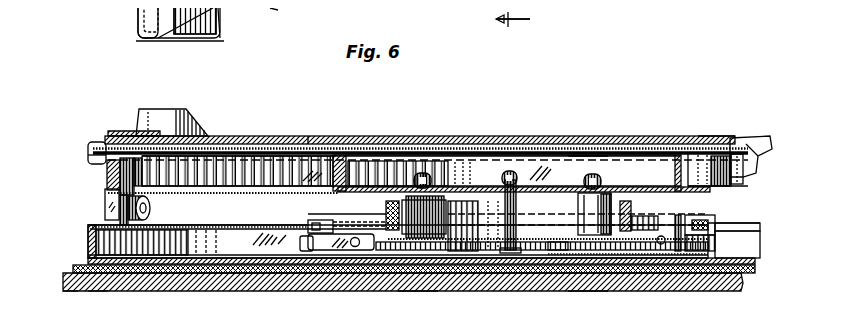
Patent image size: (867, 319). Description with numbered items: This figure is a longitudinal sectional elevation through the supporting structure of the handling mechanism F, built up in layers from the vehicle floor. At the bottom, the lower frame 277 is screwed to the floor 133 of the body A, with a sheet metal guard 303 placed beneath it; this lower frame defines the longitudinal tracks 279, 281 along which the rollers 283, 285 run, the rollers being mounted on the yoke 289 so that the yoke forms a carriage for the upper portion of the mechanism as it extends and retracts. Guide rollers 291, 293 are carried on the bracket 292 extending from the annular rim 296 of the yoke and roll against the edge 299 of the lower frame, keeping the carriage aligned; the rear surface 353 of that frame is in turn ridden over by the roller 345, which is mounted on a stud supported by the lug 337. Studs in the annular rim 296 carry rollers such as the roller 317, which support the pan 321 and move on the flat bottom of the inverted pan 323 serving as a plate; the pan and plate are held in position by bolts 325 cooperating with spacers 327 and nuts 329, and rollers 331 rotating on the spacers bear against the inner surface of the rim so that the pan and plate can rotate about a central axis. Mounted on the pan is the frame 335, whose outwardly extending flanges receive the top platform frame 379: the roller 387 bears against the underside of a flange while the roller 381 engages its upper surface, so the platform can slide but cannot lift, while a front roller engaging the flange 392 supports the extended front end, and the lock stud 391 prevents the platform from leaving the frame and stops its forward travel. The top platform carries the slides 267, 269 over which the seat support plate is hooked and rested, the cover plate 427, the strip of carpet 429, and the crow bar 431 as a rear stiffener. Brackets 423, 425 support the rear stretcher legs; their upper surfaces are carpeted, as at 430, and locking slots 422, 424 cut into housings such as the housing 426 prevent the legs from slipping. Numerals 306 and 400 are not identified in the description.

The body A is at (718, 279).
The sheet metal guard 303 is at (747, 260).
The floor 133 is at (80, 252).
The lower frame 277 is at (82, 216).
The strip of carpet 429 is at (304, 128).
The pan 321 is at (395, 150).
The rollers 331 is at (368, 170).
The annular rim 296 is at (610, 183).
The crow bar 431 is at (179, 103).
The bracket 425 is at (195, 122).
The roller 381 is at (129, 126).
The handling mechanism F is at (292, 140).
The roller 387 is at (90, 157).
The lug 337 is at (688, 172).
The rear surface 353 is at (154, 214).
The roller 345 is at (97, 187).
The bracket 292 is at (345, 213).
The guide roller 293 is at (300, 213).
The roller 285 is at (318, 243).
The slide block 306 is at (440, 258).
The nut 329 is at (420, 185).
The roller 317 is at (503, 165).
The bolt 325 is at (478, 145).
The spacer 327 is at (548, 195).
The inverted pan 323 is at (543, 233).
The yoke 289 is at (586, 148).
The roller 283 is at (668, 220).
The guide roller 291 is at (712, 222).
The edge 299 is at (750, 222).
The longitudinal track 279 is at (745, 233).
The top platform frame 379 is at (725, 160).
The frame 335 is at (722, 178).
The flange 392 is at (758, 135).
The slide 267 is at (756, 140).
The cover plate 427 is at (700, 133).
The carpet 430 is at (150, 33).
The bracket 423 is at (222, 32).
The lock stud 391 is at (236, 4).
The slide 269 is at (270, 0).
The longitudinal track 281 is at (535, 16).
The housing 426 is at (57, 305).
The locking slot 422 is at (116, 306).
The locking slot 424 is at (575, 306).
The frame 400 is at (418, 305).